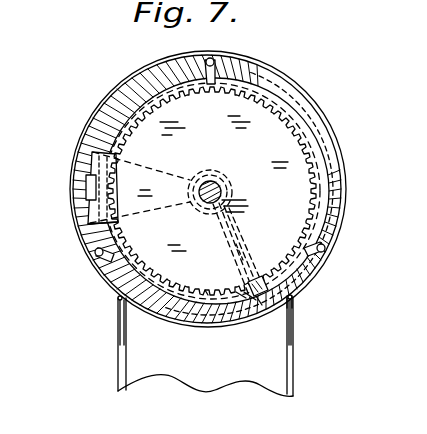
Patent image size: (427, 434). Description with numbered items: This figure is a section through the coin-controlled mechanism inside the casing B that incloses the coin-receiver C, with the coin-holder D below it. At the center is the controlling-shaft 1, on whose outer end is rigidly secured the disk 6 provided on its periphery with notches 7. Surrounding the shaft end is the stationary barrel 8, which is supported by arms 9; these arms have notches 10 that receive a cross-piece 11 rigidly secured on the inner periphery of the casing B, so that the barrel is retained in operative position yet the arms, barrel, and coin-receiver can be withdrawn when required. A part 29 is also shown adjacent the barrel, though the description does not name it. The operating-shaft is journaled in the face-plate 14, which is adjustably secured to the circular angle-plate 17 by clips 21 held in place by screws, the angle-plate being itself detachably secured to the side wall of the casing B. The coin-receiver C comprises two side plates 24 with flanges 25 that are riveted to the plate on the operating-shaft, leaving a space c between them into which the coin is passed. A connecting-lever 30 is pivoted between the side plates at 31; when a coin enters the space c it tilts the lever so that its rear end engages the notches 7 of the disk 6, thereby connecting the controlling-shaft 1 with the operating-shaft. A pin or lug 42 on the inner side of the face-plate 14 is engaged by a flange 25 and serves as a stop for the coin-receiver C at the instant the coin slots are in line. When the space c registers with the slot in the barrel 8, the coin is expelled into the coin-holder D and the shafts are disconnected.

The controlling-shaft 1 is at (218, 190).
The disk 6 is at (212, 191).
The notches 7 is at (202, 290).
The barrel 8 is at (210, 176).
The arms 9 is at (88, 226).
The notches 10 is at (90, 206).
The cross-piece 11 is at (86, 183).
The face-plate 14 is at (280, 104).
The circular angle-plate 17 is at (348, 175).
The clips 21 is at (215, 64).
The side plates 24 is at (262, 298).
The flanges 25 is at (215, 228).
The bearing 29 is at (220, 184).
The connecting-lever 30 is at (250, 300).
The pivot 31 is at (258, 304).
The pin or lug 42 is at (242, 300).
The casing B is at (336, 128).
The coin-receiver C is at (304, 290).
The coin-holder D is at (205, 346).
The space c is at (244, 240).